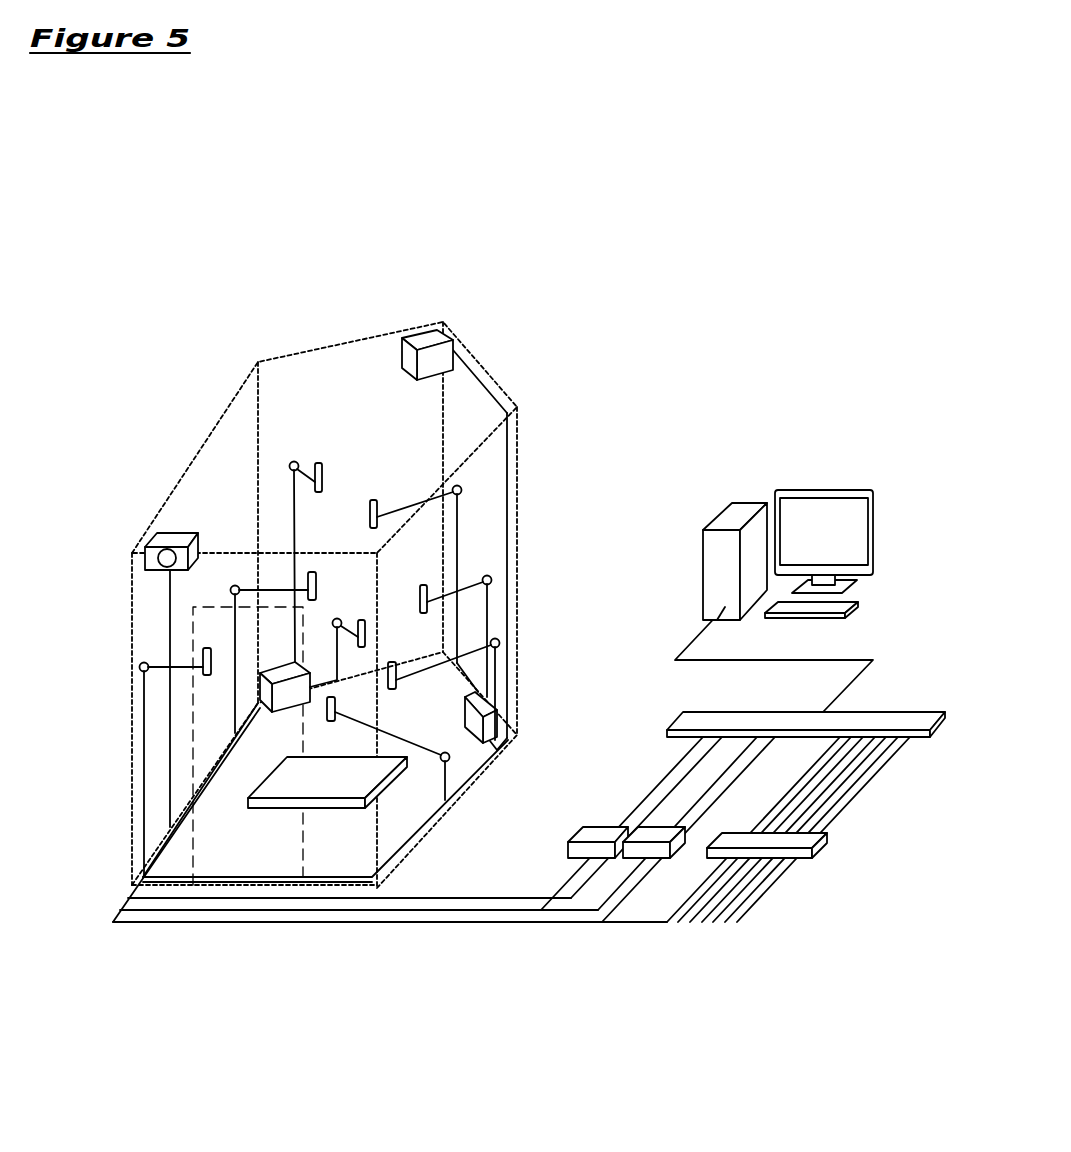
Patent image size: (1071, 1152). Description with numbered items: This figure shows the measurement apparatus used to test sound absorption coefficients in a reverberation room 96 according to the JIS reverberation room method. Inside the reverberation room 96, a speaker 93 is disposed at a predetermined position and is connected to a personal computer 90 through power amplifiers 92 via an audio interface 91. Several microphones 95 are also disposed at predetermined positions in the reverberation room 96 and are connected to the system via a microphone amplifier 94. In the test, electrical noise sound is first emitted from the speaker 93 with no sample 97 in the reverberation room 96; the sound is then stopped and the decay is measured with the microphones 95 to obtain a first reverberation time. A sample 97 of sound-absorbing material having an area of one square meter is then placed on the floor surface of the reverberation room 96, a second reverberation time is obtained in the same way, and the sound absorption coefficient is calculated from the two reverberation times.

The personal computer 90 is at (832, 483).
The audio interface 91 is at (917, 712).
The power amplifiers 92 is at (577, 835).
The speaker 93 is at (172, 534).
The microphone amplifier 94 is at (791, 865).
The microphones 95 is at (320, 462).
The reverberation room 96 is at (378, 337).
The sample 97 is at (278, 810).